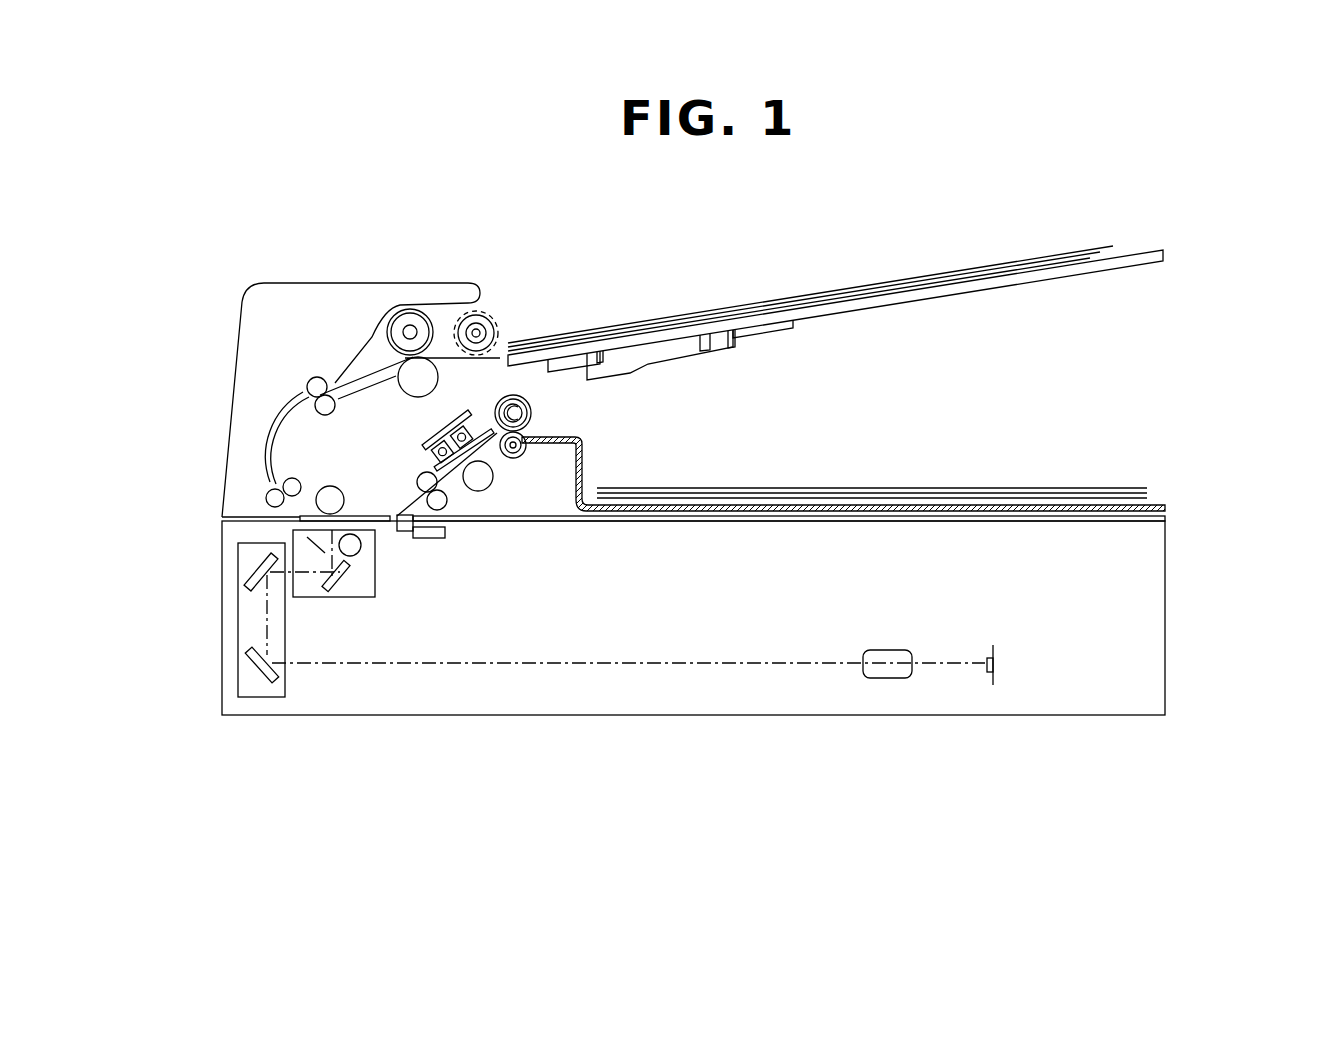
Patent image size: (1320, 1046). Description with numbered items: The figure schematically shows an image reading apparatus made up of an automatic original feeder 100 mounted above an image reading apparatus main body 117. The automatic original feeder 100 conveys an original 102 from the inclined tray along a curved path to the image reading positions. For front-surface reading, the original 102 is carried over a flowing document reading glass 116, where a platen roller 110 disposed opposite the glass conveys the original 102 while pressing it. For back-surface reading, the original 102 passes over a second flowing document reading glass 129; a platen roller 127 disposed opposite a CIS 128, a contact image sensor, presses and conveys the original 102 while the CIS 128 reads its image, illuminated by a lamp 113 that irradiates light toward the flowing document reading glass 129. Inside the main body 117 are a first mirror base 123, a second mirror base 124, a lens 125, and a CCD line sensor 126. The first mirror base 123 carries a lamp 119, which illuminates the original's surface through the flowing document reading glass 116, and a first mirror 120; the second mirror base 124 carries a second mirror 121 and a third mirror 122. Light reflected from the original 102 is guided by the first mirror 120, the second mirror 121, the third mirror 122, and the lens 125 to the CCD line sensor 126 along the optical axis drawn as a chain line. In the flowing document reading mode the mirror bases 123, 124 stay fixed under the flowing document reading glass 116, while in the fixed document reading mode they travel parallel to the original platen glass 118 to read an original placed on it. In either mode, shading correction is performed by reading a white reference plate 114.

The automatic original feeder 100 is at (1213, 230).
The original 102 is at (835, 290).
The platen roller 110 is at (330, 486).
The lamp 113 is at (426, 450).
The white reference plate 114 is at (439, 539).
The flowing document reading glass 116 is at (388, 525).
The image reading apparatus main body 117 is at (1213, 506).
The original platen glass 118 is at (672, 525).
The lamp 119 is at (354, 556).
The first mirror 120 is at (341, 588).
The second mirror 121 is at (250, 574).
The third mirror 122 is at (247, 655).
The first mirror base 123 is at (298, 523).
The second mirror base 124 is at (260, 690).
The lens 125 is at (889, 650).
The CCD line sensor 126 is at (996, 650).
The platen roller 127 is at (490, 482).
The CIS 128 is at (422, 447).
The flowing document reading glass 129 is at (495, 455).